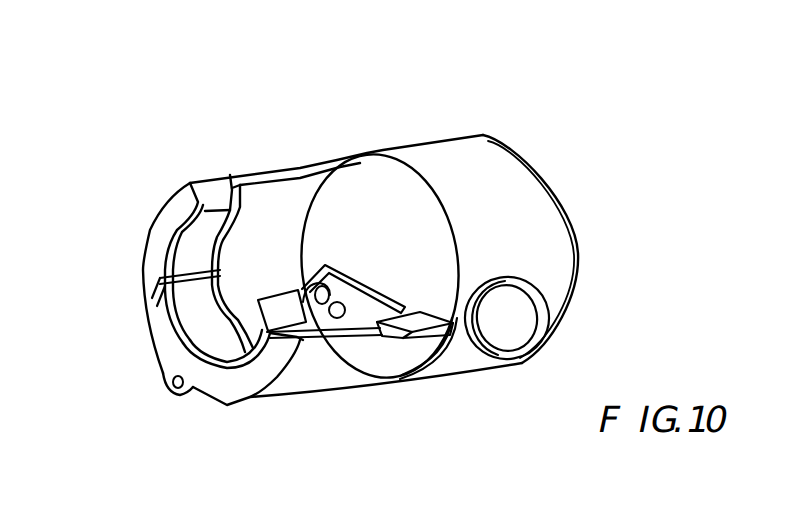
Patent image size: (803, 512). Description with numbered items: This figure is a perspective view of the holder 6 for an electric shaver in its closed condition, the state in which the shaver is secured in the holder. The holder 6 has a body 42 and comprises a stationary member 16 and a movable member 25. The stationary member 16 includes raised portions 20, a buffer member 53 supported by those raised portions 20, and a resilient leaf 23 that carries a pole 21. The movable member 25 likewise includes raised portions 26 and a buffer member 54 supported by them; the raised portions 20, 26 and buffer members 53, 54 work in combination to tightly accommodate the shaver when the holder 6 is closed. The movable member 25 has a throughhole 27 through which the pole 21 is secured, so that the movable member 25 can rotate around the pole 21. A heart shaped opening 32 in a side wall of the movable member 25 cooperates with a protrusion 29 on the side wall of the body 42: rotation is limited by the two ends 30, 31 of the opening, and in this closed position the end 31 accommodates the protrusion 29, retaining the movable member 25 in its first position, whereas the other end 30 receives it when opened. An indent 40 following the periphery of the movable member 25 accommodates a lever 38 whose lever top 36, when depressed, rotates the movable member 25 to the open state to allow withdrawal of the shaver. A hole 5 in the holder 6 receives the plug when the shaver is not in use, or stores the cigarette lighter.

The hole 5 is at (517, 322).
The holder 6 is at (533, 223).
The stationary member 16 is at (270, 193).
The raised portions 20 is at (173, 227).
The pole 21 is at (177, 384).
The resilient leaf 23 is at (250, 331).
The movable member 25 is at (343, 355).
The raised portions 26 is at (217, 298).
The throughhole 27 is at (173, 396).
The protrusion 29 is at (345, 318).
The end of heart shaped opening 30 is at (327, 267).
The end of heart shaped opening 31 is at (395, 362).
The heart shaped opening 32 is at (304, 342).
The lever top 36 is at (497, 367).
The lever 38 is at (427, 350).
The indent 40 is at (452, 340).
The body 42 is at (578, 263).
The buffer member 53 is at (205, 227).
The buffer member 54 is at (223, 353).